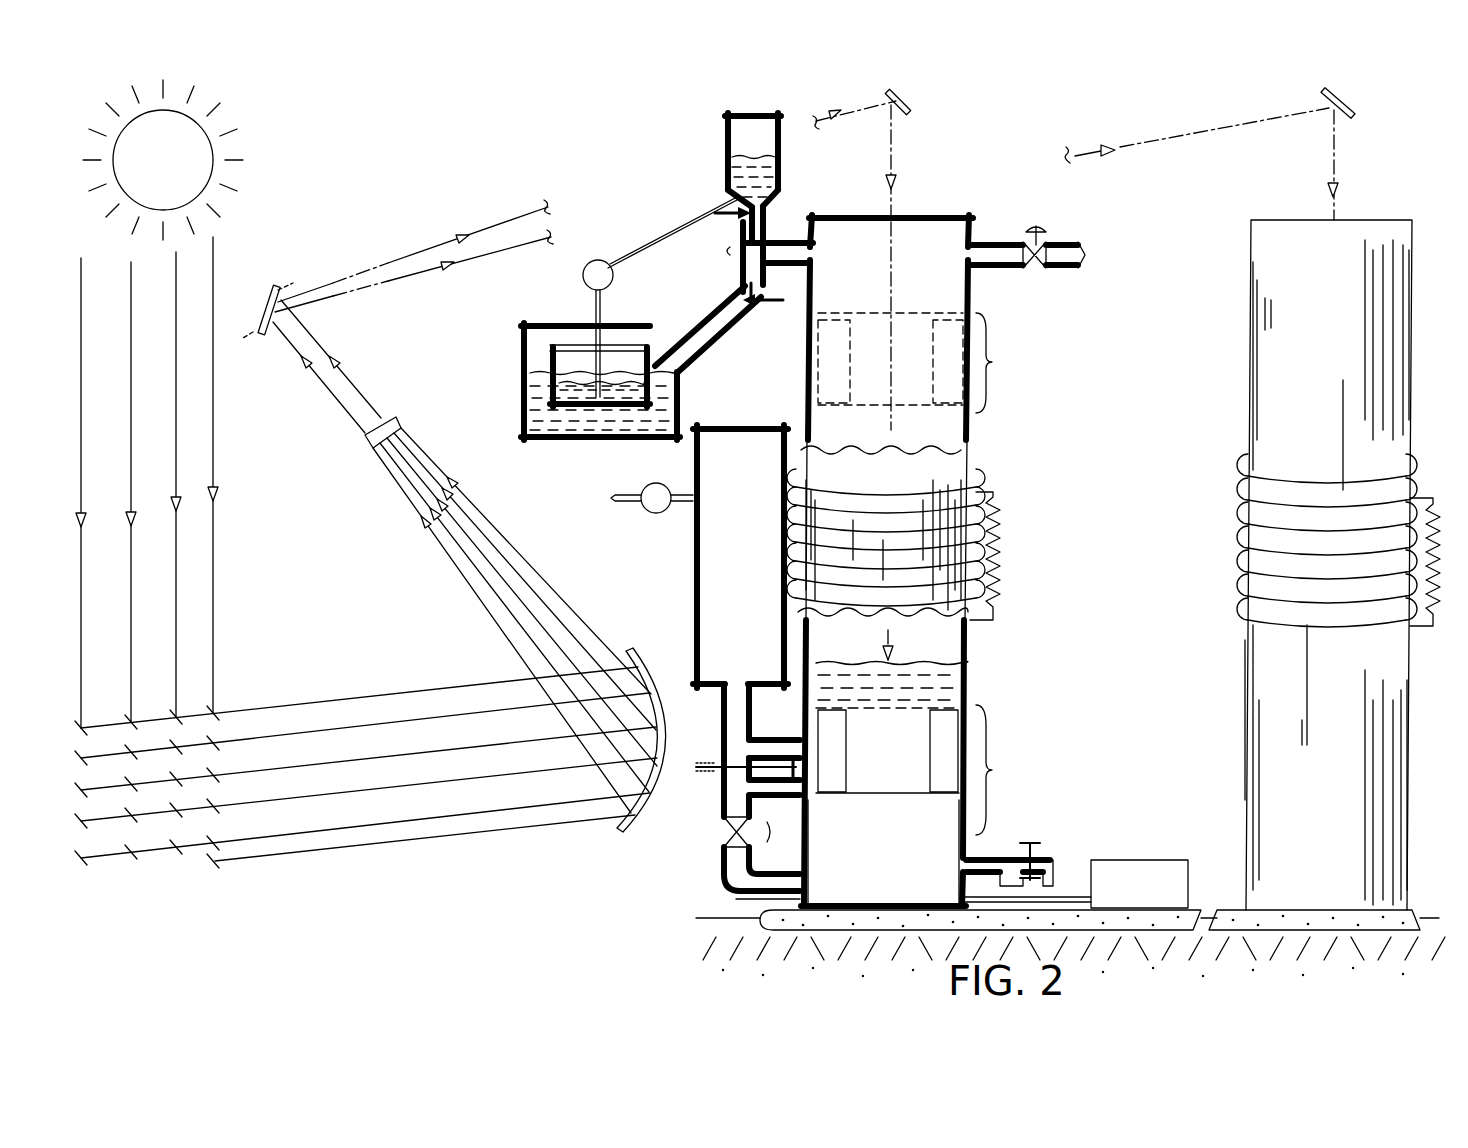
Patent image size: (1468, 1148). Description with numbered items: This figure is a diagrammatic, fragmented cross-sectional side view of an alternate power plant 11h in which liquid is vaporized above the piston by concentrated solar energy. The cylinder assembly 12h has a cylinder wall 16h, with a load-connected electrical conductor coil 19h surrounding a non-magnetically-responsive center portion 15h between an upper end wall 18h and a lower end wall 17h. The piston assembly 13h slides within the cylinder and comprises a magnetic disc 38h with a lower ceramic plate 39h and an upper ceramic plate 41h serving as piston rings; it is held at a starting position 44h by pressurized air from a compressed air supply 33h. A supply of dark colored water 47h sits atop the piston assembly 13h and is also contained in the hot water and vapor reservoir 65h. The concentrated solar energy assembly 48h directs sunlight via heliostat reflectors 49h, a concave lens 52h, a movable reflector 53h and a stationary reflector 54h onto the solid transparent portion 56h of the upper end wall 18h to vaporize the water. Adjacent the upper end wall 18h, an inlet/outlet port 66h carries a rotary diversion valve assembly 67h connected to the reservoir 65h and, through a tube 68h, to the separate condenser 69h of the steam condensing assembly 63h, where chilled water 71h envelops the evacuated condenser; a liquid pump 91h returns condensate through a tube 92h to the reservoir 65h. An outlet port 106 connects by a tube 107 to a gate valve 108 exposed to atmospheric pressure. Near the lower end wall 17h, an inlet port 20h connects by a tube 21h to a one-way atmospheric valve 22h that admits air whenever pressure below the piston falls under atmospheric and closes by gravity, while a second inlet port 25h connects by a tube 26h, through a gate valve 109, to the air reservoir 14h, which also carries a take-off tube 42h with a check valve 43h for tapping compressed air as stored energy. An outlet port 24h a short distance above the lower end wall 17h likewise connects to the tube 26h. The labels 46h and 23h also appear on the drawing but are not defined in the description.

The movable reflector 53h is at (268, 285).
The concentrated solar energy assembly 48h is at (74, 486).
The concave lens 52h is at (398, 424).
The heliostat reflectors 49h is at (147, 783).
The hot water and vapor reservoir 65h is at (722, 141).
The dark colored water 47h is at (723, 172).
The tube 92h is at (641, 244).
The liquid pump 91h is at (580, 283).
The steam condensing assembly 63h is at (506, 388).
The separate condenser 69h is at (612, 400).
The chilled water 71h is at (643, 399).
The air reservoir 14h is at (678, 462).
The rotary diversion valve assembly 67h is at (718, 262).
The inlet/outlet port 66h is at (802, 263).
The tube 68h is at (702, 345).
The take-off tube 42h is at (616, 504).
The check valve 43h is at (646, 513).
The solid transparent portion 56h is at (892, 215).
The stationary reflector 54h is at (880, 89).
The upper end wall 18h is at (947, 215).
The outlet port 106 is at (968, 255).
The gate valve 108 is at (1046, 236).
The tube 107 is at (1002, 268).
The magnet assembly 46h is at (925, 363).
The cylinder wall 16h is at (976, 413).
The power plant 11h is at (998, 428).
The center portion 15h is at (957, 472).
The load-connected electrical conductor coil 19h is at (960, 492).
The upper ceramic plate 41h is at (873, 708).
The magnetic disc 38h is at (970, 698).
The lower ceramic plate 39h is at (947, 723).
The piston assembly 13h is at (913, 773).
The starting position 44h is at (908, 782).
The lower end wall 17h is at (1024, 770).
The cylinder assembly 12h is at (877, 907).
The inlet port 20h is at (972, 820).
The tube 21h is at (1003, 857).
The one-way atmospheric valve 22h is at (1045, 860).
The compressed air supply 33h is at (1150, 860).
The tube 26h is at (718, 724).
The valve stem 23h is at (785, 757).
The outlet port 24h is at (760, 785).
The gate valve 109 is at (737, 832).
The second inlet port 25h is at (757, 880).